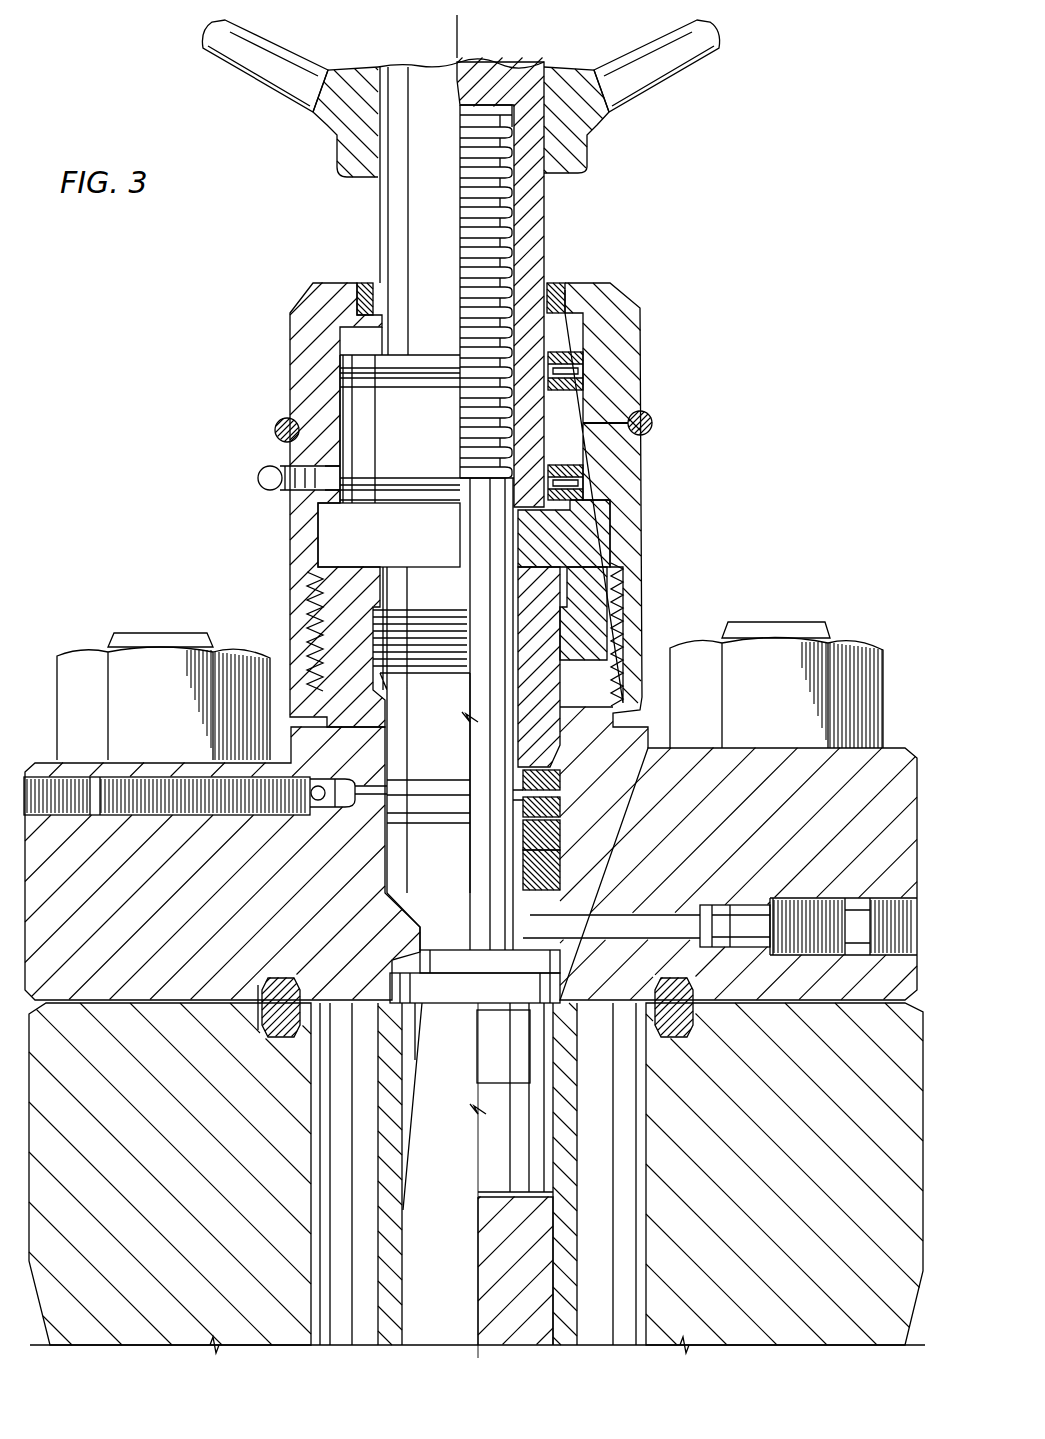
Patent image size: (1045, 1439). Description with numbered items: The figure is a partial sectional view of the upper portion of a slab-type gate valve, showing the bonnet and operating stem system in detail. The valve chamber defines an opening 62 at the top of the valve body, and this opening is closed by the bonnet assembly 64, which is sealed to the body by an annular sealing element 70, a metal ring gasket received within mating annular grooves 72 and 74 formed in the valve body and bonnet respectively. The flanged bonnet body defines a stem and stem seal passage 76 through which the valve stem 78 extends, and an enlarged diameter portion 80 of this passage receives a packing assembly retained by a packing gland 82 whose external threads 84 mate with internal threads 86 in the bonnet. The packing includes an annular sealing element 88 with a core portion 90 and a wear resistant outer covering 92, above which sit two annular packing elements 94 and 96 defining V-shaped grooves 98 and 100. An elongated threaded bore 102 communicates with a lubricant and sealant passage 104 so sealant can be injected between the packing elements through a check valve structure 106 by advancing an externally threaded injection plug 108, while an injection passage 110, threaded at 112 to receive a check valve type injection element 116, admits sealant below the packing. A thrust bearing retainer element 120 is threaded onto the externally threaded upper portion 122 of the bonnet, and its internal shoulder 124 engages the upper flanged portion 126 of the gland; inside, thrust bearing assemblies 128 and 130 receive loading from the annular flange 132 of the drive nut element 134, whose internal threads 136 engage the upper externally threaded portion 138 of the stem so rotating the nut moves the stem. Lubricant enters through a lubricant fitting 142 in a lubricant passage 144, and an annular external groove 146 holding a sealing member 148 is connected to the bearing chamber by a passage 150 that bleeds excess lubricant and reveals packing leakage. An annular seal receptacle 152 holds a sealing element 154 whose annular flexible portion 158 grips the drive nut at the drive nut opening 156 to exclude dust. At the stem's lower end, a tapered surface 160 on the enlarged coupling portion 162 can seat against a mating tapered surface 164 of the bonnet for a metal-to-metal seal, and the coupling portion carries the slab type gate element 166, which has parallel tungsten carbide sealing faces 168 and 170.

The opening 62 is at (643, 1005).
The bonnet assembly 64 is at (152, 496).
The annular sealing element 70 is at (267, 990).
The annular groove 72 is at (267, 1027).
The annular groove 74 is at (300, 987).
The stem and stem seal passage 76 is at (413, 907).
The valve stem 78 is at (497, 907).
The enlarged diameter portion 80 is at (400, 843).
The packing gland 82 is at (590, 647).
The external threads 84 is at (373, 657).
The internal threads 86 is at (373, 617).
The annular sealing element 88 is at (420, 870).
The core portion 90 is at (547, 837).
The wear resistant outer covering 92 is at (560, 863).
The annular packing element 94 is at (557, 812).
The annular packing element 96 is at (557, 780).
The V-shaped groove 98 is at (523, 800).
The V-shaped groove 100 is at (520, 793).
The elongated threaded bore 102 is at (200, 812).
The lubricant and sealant passage 104 is at (350, 778).
The check valve structure 106 is at (283, 815).
The externally threaded injection plug 108 is at (62, 805).
The injection passage 110 is at (735, 895).
The internal threads 112 is at (881, 898).
The check valve type injection element 116 is at (835, 928).
The thrust bearing retainer element 120 is at (627, 368).
The externally threaded upper portion 122 is at (628, 642).
The internal shoulder 124 is at (590, 510).
The upper flanged portion 126 is at (597, 540).
The thrust bearing assembly 128 is at (585, 360).
The thrust bearing assembly 130 is at (585, 470).
The annular flange 132 is at (355, 410).
The drive nut element 134 is at (533, 212).
The internal threads 136 is at (515, 420).
The upper externally threaded portion 138 is at (507, 158).
The lubricant fitting 142 is at (258, 478).
The lubricant passage 144 is at (330, 483).
The annular external groove 146 is at (274, 432).
The sealing member 148 is at (655, 427).
The passage 150 is at (595, 423).
The annular seal receptacle 152 is at (590, 297).
The sealing element 154 is at (560, 292).
The drive nut opening 156 is at (383, 330).
The annular flexible portion 158 is at (368, 288).
The tapered surface 160 is at (530, 970).
The enlarged coupling portion 162 is at (551, 1109).
The mating tapered surface 164 is at (417, 983).
The slab type gate element 166 is at (544, 1315).
The tungsten carbide sealing face 168 is at (558, 1254).
The tungsten carbide sealing face 170 is at (388, 1257).